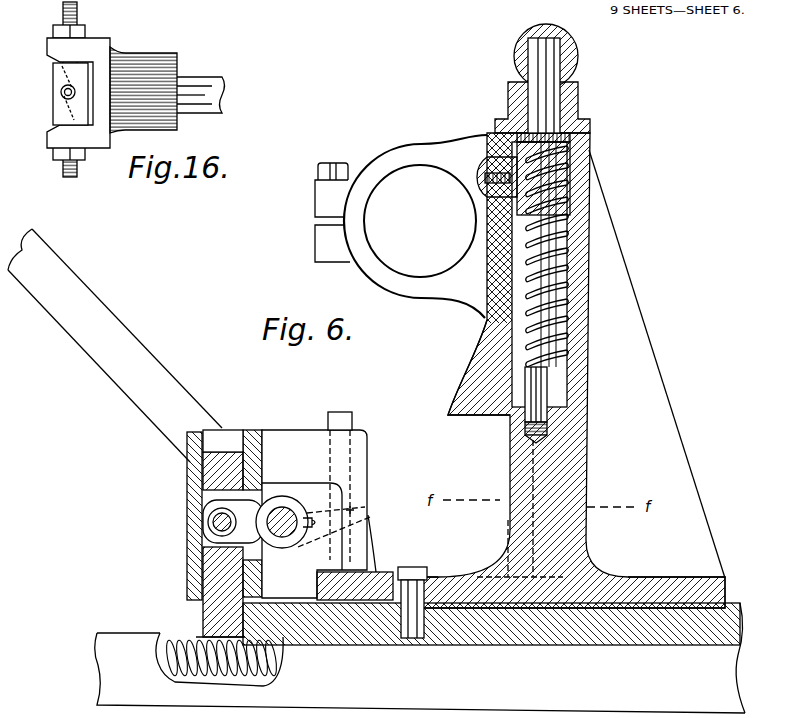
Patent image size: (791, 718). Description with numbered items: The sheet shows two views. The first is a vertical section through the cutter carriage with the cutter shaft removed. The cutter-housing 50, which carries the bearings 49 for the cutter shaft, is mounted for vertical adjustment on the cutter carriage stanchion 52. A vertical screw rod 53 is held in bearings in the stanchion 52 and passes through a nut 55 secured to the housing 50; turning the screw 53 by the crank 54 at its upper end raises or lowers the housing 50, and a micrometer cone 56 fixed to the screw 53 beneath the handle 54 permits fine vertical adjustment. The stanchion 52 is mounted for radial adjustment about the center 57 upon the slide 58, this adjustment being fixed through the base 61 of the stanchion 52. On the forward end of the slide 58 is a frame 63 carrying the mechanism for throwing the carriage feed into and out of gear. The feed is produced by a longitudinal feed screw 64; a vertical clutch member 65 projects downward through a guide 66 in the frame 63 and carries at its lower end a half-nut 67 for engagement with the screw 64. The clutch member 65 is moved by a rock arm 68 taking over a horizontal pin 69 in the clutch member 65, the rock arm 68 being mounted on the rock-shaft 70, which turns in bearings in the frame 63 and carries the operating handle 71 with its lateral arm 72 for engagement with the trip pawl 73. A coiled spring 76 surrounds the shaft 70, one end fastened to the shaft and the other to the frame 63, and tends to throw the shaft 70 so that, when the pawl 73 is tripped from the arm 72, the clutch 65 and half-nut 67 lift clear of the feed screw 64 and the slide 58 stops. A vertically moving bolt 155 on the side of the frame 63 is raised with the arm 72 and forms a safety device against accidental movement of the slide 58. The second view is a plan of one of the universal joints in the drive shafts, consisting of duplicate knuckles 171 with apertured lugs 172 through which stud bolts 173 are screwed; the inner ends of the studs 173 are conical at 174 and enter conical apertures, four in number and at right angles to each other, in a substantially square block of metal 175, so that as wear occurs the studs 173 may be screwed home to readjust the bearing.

In FIG. 6, the bearings 49 is at (423, 145).
In FIG. 6, the cutter-housing 50 is at (483, 338).
In FIG. 6, the cutter carriage stanchion 52 is at (585, 442).
In FIG. 6, the vertical screw rod 53 is at (531, 407).
In FIG. 6, the crank 54 is at (577, 56).
In FIG. 6, the nut 55 is at (570, 168).
In FIG. 6, the micrometer cone 56 is at (578, 116).
In FIG. 6, the center 57 is at (418, 567).
In FIG. 6, the slide 58 is at (507, 644).
In FIG. 6, the base 61 is at (643, 577).
In FIG. 6, the frame 63 is at (358, 463).
In FIG. 6, the longitudinal screw 64 is at (172, 640).
In FIG. 6, the vertical clutch member 65 is at (205, 585).
In FIG. 6, the guide 66 is at (244, 452).
In FIG. 6, the half-nut 67 is at (200, 636).
In FIG. 6, the rock arm 68 is at (205, 509).
In FIG. 6, the horizontal pin 69 is at (212, 526).
In FIG. 6, the rock-shaft 70 is at (284, 534).
In FIG. 6, the operating handle 71 is at (165, 372).
In FIG. 6, the lateral arm 72 is at (356, 518).
In FIG. 6, the trip pawl 73 is at (364, 546).
In FIG. 6, the coiled spring 76 is at (296, 510).
In FIG. 6, the vertically moving bolt 155 is at (352, 412).
In FIG. 16, the knuckles 171 is at (150, 64).
In FIG. 16, the apertured lugs 172 is at (85, 148).
In FIG. 16, the stud bolts 173 is at (78, 26).
In FIG. 16, the conical ends 174 is at (60, 67).
In FIG. 16, the square block of metal 175 is at (62, 98).